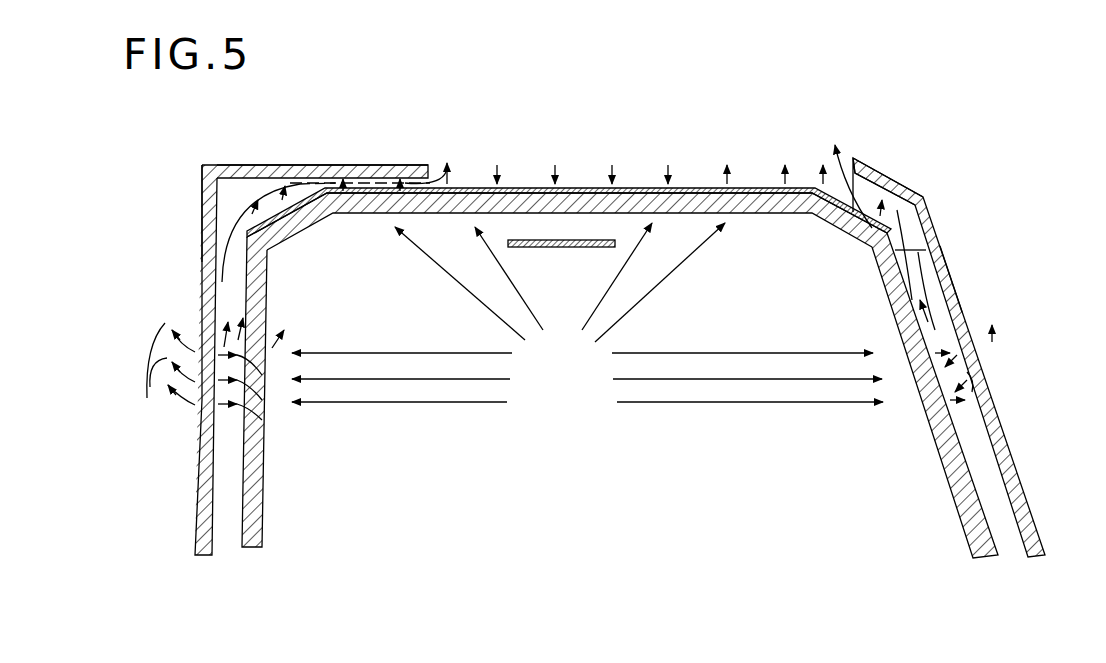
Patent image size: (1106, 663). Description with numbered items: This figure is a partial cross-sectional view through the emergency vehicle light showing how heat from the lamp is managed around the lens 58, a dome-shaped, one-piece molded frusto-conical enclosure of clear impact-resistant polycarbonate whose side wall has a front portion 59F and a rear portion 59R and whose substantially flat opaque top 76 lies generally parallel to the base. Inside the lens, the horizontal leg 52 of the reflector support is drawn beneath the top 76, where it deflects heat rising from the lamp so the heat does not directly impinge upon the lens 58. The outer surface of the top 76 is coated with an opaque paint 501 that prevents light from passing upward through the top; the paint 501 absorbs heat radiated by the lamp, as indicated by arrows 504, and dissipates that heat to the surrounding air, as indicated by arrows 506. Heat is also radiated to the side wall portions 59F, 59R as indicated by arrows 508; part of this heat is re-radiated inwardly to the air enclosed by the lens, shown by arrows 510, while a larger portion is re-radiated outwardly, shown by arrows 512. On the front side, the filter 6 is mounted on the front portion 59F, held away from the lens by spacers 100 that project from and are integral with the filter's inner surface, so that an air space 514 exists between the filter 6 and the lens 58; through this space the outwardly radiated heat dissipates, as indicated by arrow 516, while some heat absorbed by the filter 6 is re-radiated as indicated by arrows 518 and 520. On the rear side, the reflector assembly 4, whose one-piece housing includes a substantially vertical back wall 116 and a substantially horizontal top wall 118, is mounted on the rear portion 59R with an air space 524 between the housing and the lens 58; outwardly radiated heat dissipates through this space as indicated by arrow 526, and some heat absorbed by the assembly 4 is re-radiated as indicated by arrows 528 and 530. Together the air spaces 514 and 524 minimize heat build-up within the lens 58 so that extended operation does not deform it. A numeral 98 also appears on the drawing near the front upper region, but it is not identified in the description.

The reflector 4 is at (202, 168).
The back wall 116 is at (202, 262).
The top wall 118 is at (357, 166).
The top 76 is at (740, 205).
The rear portion of side wall 59R is at (255, 482).
The front portion of side wall 59F is at (952, 467).
The lens 58 is at (955, 497).
The front upper panel 98 is at (886, 177).
The spacers 100 is at (900, 212).
The filter 6 is at (957, 312).
The leg 52 is at (563, 240).
The arrows 504 is at (492, 253).
The arrows 508 is at (428, 380).
The opaque paint 501 is at (526, 187).
The arrows 506 is at (668, 182).
The arrow 526 is at (440, 180).
The arrow 516 is at (838, 152).
The arrows 528 is at (226, 335).
The arrows 512 is at (240, 318).
The arrows 510 is at (278, 345).
The arrows 530 is at (161, 374).
The arrows 520 is at (982, 350).
The arrows 518 is at (967, 372).
The air space 524 is at (225, 532).
The air space 514 is at (1010, 550).